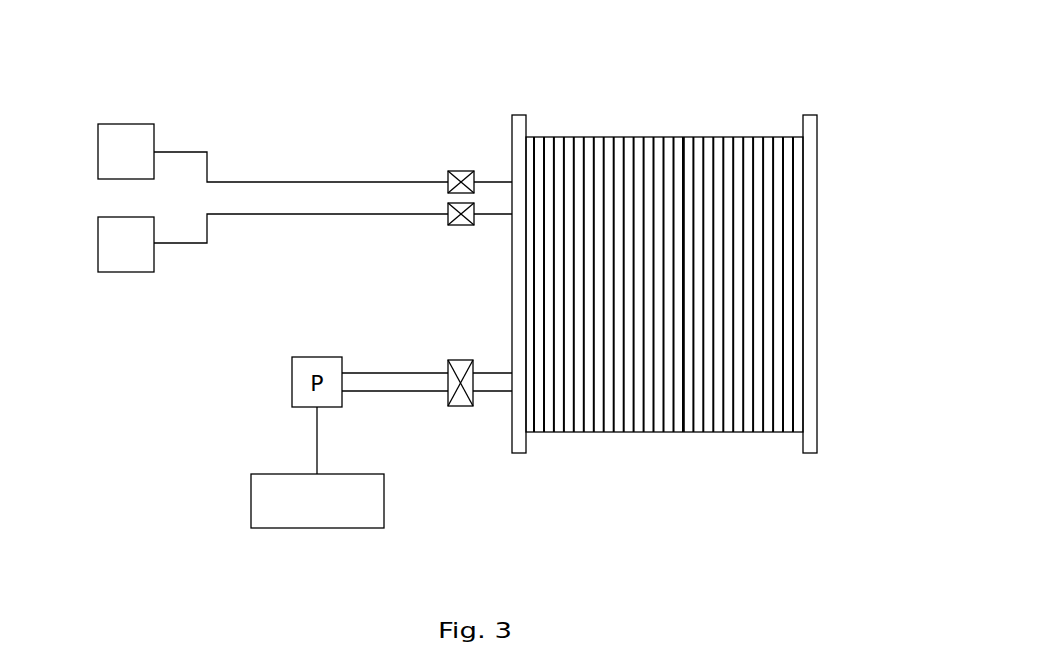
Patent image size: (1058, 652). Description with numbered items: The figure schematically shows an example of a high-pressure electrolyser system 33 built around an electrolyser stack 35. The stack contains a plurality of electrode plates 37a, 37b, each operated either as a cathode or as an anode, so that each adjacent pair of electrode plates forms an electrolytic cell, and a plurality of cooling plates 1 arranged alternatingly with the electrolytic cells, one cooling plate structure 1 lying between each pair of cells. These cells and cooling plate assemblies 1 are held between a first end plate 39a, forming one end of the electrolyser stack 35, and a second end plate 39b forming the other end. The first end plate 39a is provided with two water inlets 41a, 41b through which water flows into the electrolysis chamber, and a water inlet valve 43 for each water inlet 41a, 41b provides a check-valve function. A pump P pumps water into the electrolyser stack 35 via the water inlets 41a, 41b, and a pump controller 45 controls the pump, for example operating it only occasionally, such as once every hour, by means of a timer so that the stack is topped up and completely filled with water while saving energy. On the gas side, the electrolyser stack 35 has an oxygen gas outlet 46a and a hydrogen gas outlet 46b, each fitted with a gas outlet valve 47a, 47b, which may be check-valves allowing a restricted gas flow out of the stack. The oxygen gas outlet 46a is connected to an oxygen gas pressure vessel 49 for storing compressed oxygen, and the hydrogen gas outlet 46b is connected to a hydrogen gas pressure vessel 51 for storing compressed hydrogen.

The cooling plate 1 is at (552, 432).
The high-pressure electrolyser system 33 is at (37, 170).
The electrolyser stack 35 is at (703, 76).
The electrode plate 37a is at (530, 432).
The electrode plate 37b is at (542, 432).
The first end plate 39a is at (519, 115).
The second end plate 39b is at (817, 228).
The water inlet 41a is at (488, 373).
The water inlet 41b is at (480, 392).
The water inlet valve 43 is at (467, 406).
The pump controller 45 is at (303, 513).
The oxygen gas outlet 46a is at (495, 182).
The hydrogen gas outlet 46b is at (500, 214).
The gas outlet valve 47a is at (460, 171).
The gas outlet valve 47b is at (460, 225).
The oxygen gas pressure vessel 49 is at (112, 165).
The hydrogen gas pressure vessel 51 is at (112, 258).